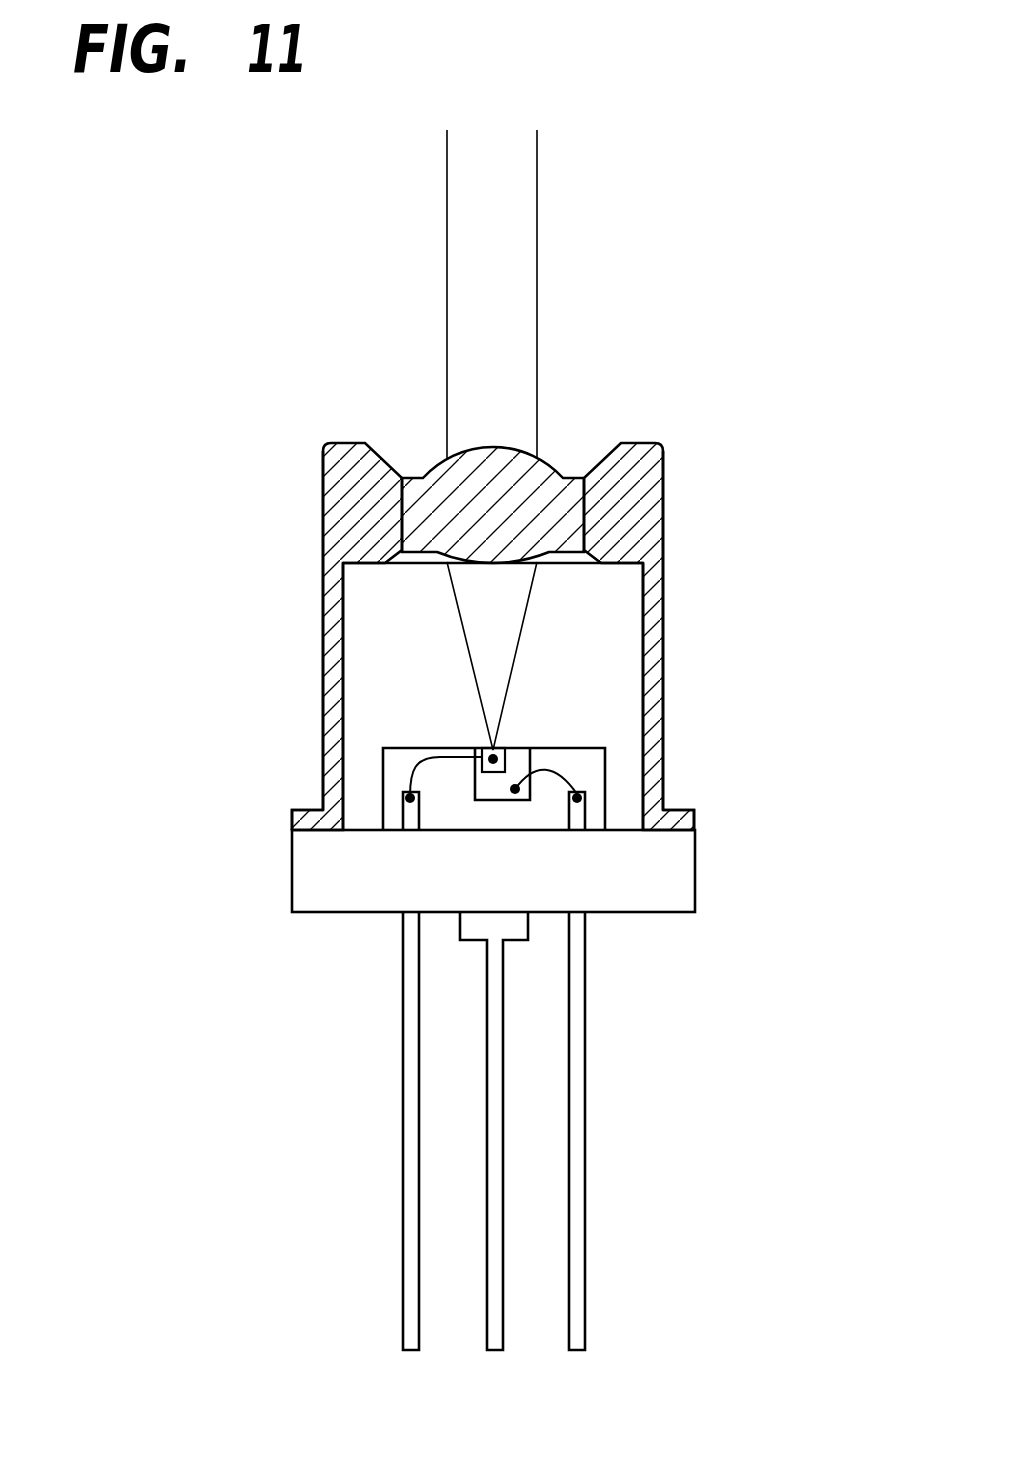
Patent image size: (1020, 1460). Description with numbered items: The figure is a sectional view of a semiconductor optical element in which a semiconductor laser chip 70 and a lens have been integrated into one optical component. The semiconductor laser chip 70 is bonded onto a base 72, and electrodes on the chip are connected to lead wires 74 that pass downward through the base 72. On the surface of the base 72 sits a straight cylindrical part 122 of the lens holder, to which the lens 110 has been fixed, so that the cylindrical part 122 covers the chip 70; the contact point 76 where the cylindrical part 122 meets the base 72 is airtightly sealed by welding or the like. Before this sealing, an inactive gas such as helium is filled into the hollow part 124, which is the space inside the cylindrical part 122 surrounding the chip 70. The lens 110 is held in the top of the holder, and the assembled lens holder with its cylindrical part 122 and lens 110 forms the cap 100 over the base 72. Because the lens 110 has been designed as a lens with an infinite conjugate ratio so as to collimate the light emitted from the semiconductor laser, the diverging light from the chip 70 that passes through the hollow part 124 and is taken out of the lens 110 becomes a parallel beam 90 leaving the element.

The semiconductor laser chip 70 is at (490, 750).
The base 72 is at (678, 877).
The lead wires 74 is at (578, 1078).
The contact point 76 is at (695, 813).
The parallel beam 90 is at (515, 273).
The cap 100 is at (617, 508).
The lens 110 is at (563, 443).
The straight cylindrical part 122 is at (663, 725).
The hollow part 124 is at (612, 643).